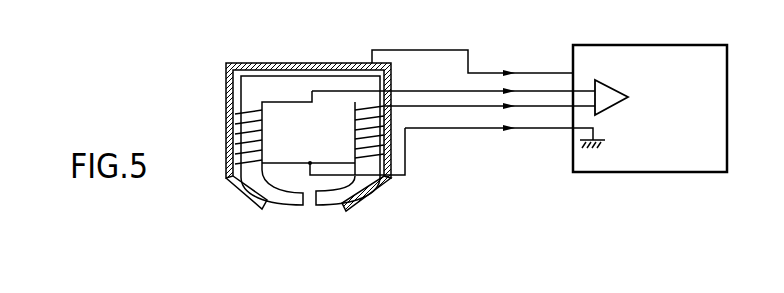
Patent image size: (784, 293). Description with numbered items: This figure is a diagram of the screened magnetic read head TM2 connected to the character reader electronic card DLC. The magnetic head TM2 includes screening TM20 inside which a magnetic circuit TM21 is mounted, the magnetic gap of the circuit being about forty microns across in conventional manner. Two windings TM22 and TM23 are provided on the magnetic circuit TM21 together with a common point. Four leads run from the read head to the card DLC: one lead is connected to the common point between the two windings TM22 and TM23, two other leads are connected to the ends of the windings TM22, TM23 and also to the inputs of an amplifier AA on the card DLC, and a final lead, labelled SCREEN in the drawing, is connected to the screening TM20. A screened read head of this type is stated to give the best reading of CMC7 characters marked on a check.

The magnetic head TM2 is at (206, 79).
The screening TM20 is at (319, 64).
The magnetic circuit TM21 is at (252, 96).
The winding TM22 is at (263, 121).
The winding TM23 is at (355, 137).
The screen connection SCREEN is at (472, 50).
The character reader electronic card DLC is at (700, 45).
The amplifier AA is at (616, 95).